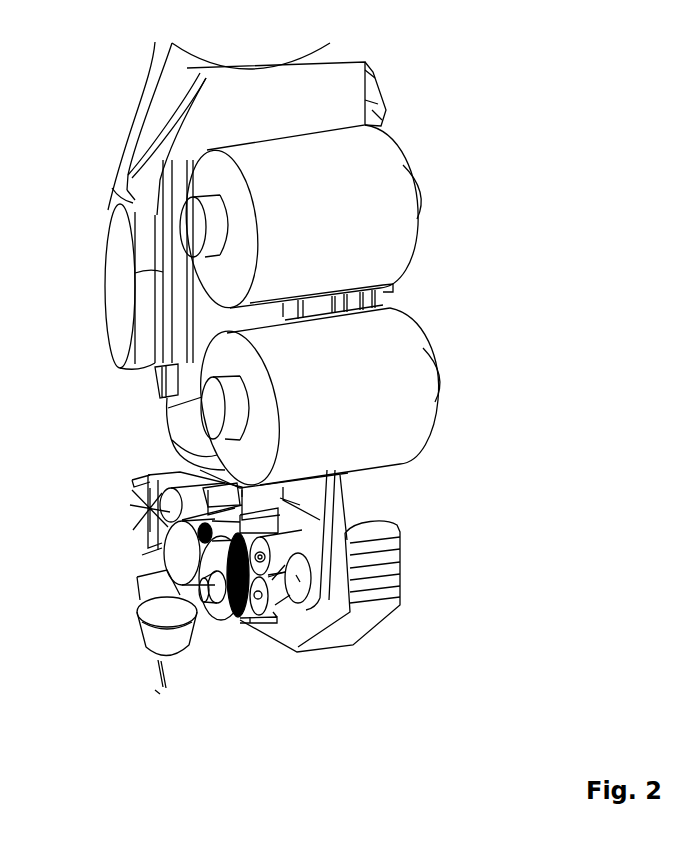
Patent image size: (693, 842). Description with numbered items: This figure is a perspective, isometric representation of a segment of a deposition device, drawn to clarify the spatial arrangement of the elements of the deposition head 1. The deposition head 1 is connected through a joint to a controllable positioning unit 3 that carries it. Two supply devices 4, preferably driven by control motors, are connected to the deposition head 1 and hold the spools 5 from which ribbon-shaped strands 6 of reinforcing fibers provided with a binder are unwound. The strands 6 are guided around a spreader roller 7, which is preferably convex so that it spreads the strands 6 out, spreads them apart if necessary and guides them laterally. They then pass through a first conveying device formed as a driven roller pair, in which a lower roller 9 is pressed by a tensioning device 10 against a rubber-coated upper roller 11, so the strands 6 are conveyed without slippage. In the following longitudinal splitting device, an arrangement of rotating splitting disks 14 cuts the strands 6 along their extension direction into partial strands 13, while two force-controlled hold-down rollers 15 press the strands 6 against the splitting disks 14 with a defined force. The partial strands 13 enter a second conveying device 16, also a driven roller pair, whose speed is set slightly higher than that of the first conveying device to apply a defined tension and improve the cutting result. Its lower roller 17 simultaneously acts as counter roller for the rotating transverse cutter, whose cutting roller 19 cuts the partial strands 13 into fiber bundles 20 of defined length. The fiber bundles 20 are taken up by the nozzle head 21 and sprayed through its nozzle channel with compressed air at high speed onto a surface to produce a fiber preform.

The deposition head 1 is at (403, 603).
The controllable positioning unit 3 is at (130, 195).
The supply device 4 is at (420, 182).
The spool 5 is at (402, 255).
The ribbon-shaped strands 6 is at (343, 527).
The spreader roller 7 is at (308, 582).
The lower roller 9 is at (277, 600).
The tensioning device 10 is at (260, 623).
The upper roller 11 is at (283, 542).
The partial strands 13 is at (148, 510).
The splitting disks 14 is at (230, 615).
The hold-down rollers 15 is at (212, 537).
The second conveying device 16 is at (177, 495).
The lower roller 17 is at (180, 560).
The cutting roller 19 is at (140, 480).
The fiber bundles 20 is at (150, 665).
The nozzle head 21 is at (140, 630).